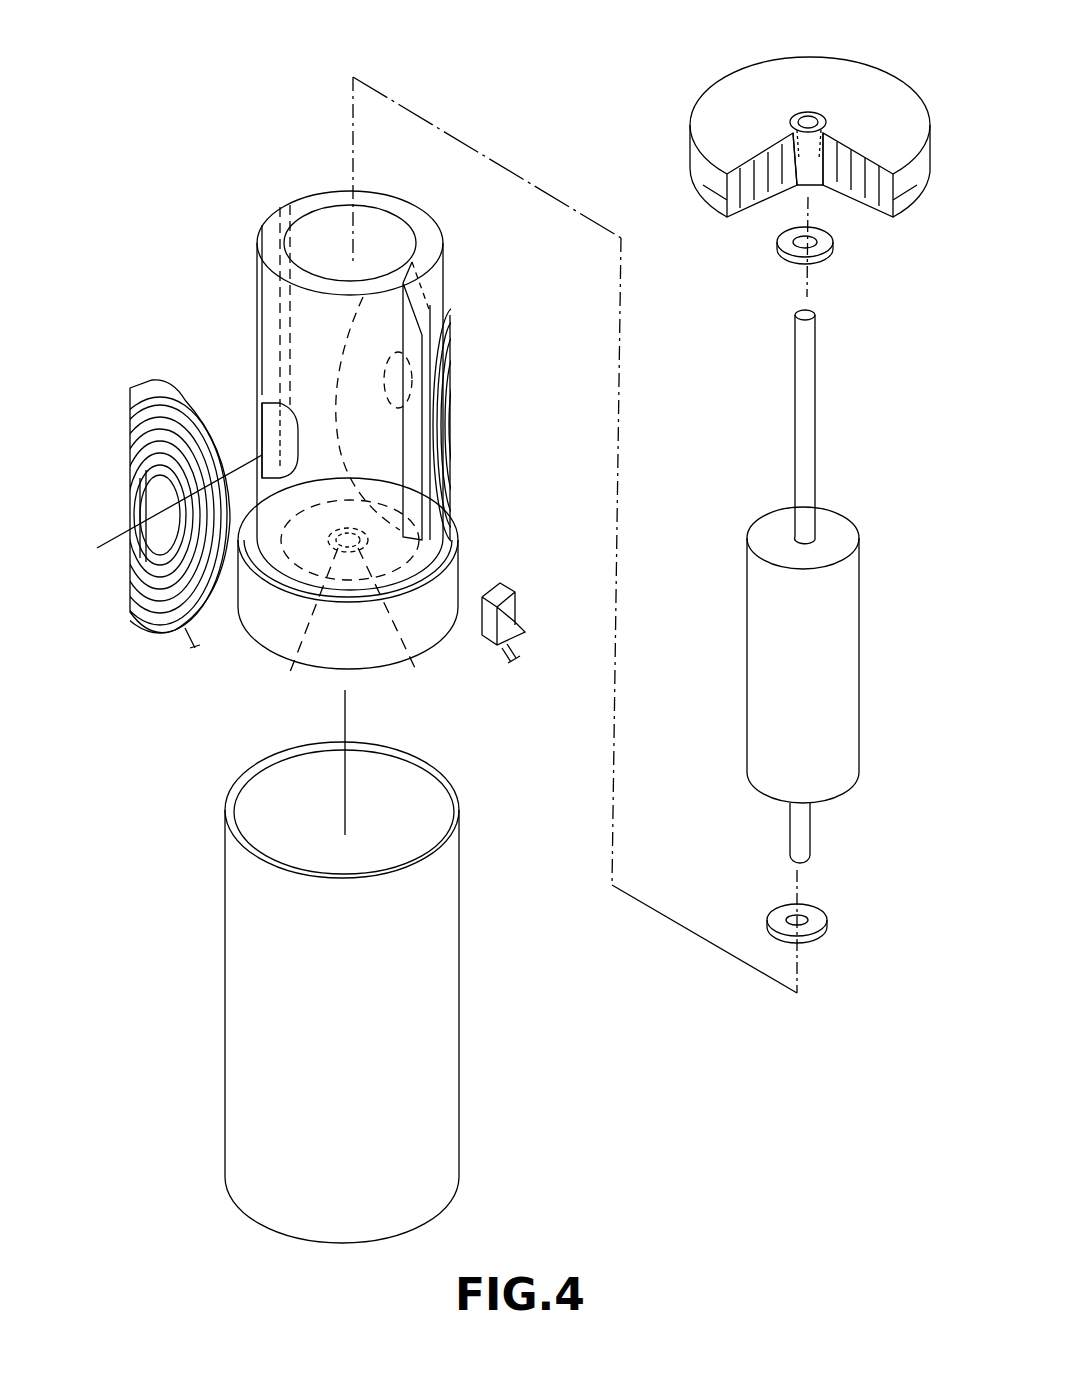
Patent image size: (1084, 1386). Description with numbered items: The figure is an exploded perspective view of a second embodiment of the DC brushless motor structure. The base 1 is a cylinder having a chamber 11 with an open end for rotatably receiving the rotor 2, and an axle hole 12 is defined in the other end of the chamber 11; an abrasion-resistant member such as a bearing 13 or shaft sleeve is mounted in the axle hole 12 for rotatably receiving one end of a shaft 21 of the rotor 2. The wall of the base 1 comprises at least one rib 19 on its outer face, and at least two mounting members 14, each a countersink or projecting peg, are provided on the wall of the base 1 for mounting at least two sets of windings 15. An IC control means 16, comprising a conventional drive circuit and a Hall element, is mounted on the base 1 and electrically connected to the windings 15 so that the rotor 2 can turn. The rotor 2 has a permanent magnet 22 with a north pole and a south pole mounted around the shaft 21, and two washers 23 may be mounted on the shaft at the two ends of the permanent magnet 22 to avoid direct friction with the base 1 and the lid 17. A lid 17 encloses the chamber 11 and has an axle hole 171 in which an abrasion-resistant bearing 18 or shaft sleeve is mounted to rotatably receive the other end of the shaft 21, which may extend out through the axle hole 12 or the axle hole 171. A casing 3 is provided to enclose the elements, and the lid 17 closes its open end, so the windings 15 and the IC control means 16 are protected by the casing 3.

The base 1 is at (320, 195).
The chamber 11 is at (397, 225).
The rib 19 is at (265, 233).
The mounting member 14 is at (258, 430).
The winding 15 is at (150, 385).
The axle hole 12 is at (418, 668).
The bearing 13 is at (290, 662).
The IC control means 16 is at (505, 603).
The casing 3 is at (450, 1105).
The rotor 2 is at (737, 522).
The lid 17 is at (708, 100).
The bearing 18 is at (795, 120).
The axle hole 171 is at (813, 122).
The washer 23 is at (832, 248).
The shaft 21 is at (797, 445).
The permanent magnet 22 is at (745, 650).